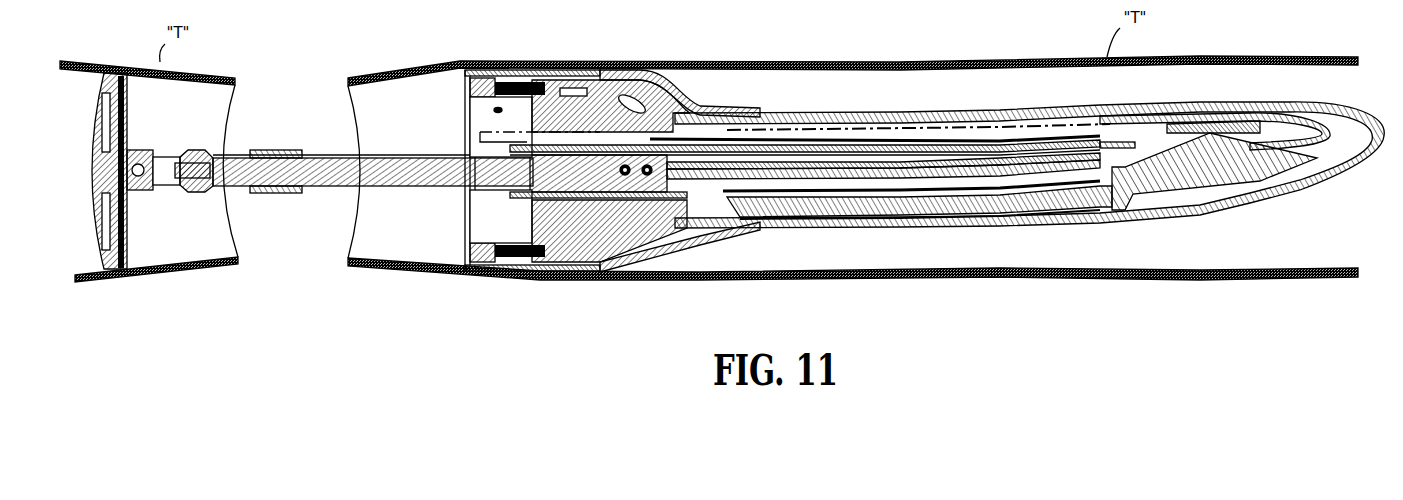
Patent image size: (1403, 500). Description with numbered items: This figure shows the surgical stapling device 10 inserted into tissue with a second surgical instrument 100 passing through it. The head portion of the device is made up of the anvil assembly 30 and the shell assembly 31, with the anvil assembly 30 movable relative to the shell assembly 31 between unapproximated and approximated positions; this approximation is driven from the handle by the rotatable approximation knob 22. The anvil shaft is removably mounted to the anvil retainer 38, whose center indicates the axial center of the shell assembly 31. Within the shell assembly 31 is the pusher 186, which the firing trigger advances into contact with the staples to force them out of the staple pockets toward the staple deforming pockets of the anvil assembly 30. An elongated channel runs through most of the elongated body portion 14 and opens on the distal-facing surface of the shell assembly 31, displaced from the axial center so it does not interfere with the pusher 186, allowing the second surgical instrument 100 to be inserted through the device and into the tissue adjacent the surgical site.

The surgical stapling device 10 is at (1004, 78).
The elongated body portion 14 is at (899, 86).
The rotatable approximation knob 22 is at (737, 168).
The anvil assembly 30 is at (98, 97).
The shell assembly 31 is at (492, 72).
The anvil retainer 38 is at (272, 168).
The second surgical instrument 100 is at (485, 137).
The pusher 186 is at (598, 107).